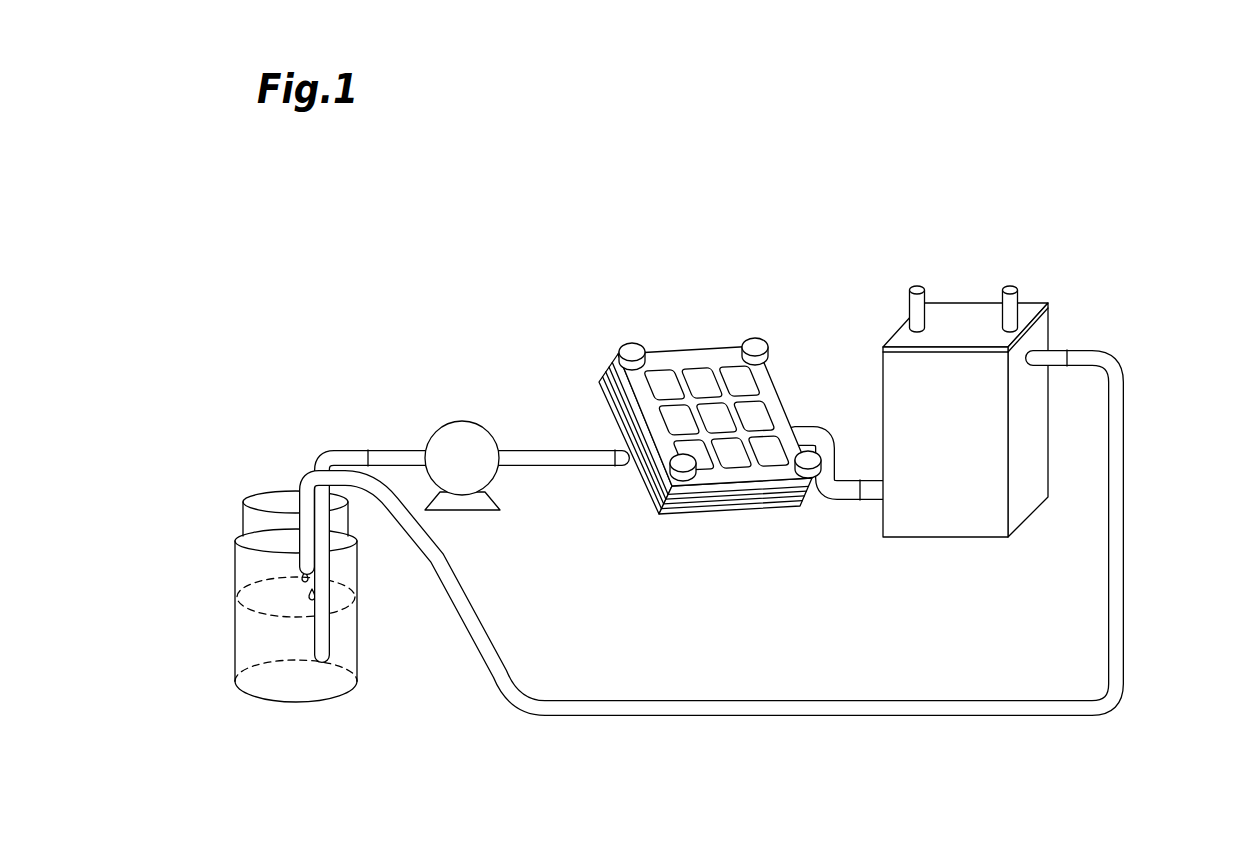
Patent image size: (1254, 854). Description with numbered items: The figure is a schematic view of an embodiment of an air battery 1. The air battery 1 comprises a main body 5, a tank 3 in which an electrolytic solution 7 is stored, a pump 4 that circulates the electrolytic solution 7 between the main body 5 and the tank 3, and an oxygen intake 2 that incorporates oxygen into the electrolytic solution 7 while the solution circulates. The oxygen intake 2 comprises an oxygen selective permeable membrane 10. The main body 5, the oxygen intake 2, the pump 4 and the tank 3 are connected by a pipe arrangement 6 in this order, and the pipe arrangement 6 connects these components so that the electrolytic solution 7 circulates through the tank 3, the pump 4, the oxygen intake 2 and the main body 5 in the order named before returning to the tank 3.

The air battery 1 is at (1172, 170).
The oxygen intake 2 is at (688, 358).
The tank 3 is at (245, 572).
The pump 4 is at (462, 432).
The main body 5 is at (977, 308).
The pipe arrangement 6 is at (555, 453).
The electrolytic solution 7 is at (290, 692).
The oxygen selective permeable membrane 10 is at (607, 392).